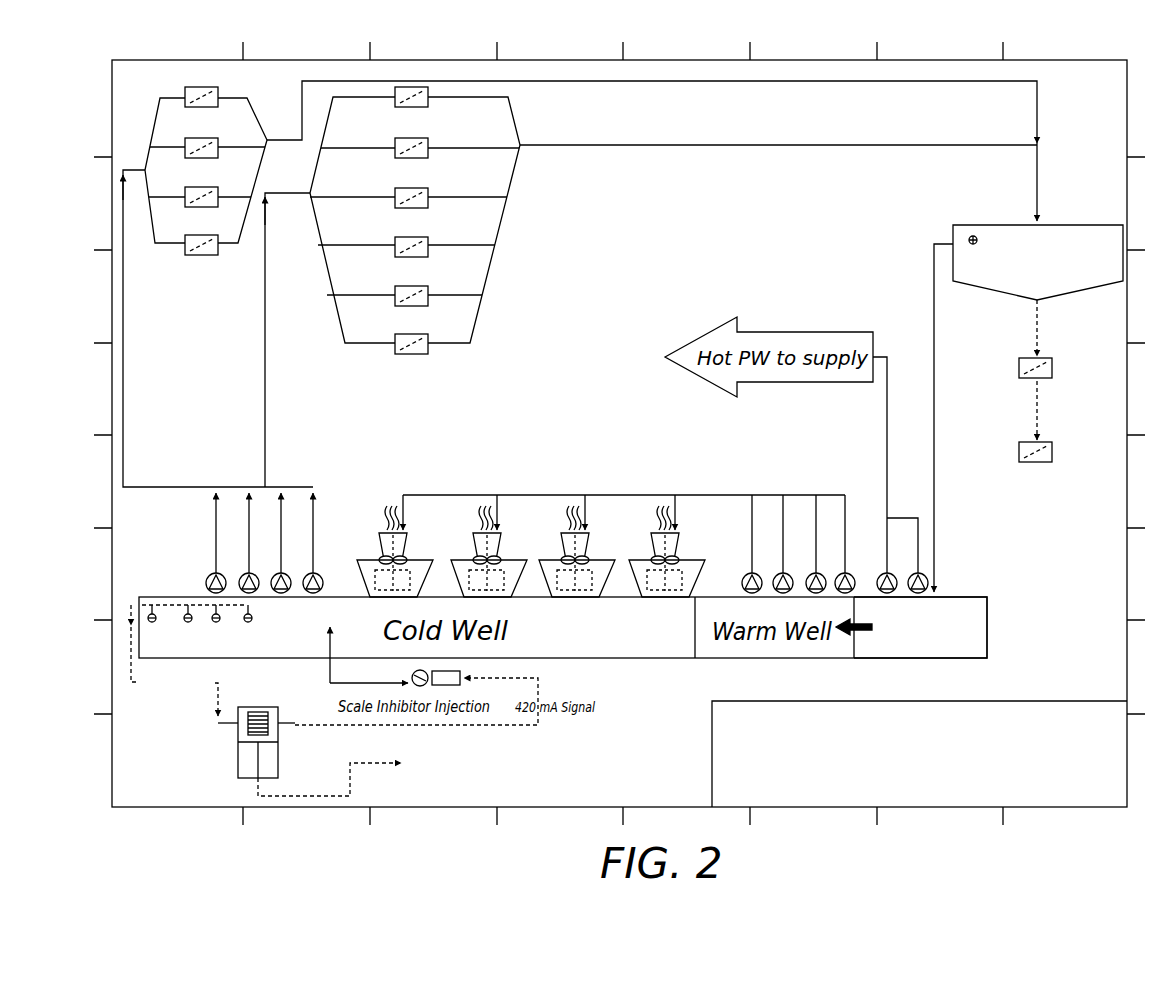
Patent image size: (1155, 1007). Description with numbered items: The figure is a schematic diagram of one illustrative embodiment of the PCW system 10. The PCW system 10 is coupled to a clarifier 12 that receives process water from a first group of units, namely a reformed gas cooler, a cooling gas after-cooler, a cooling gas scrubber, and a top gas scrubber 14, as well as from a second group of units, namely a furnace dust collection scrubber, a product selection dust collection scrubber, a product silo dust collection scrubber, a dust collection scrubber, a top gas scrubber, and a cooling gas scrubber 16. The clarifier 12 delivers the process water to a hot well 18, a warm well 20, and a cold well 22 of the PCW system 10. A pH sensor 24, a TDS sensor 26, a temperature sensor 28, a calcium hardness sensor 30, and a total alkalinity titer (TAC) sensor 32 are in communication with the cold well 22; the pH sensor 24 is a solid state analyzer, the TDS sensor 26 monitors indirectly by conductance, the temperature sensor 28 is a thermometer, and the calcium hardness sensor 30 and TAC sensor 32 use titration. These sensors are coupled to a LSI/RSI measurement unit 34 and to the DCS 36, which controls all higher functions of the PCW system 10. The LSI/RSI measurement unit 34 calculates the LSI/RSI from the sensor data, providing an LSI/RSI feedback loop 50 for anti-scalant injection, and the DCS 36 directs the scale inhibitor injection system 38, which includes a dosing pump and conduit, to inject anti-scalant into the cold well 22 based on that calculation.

The PCW system 10 is at (548, 462).
The clarifier 12 is at (1048, 258).
The reformed gas cooler, cooling gas after-cooler, cooling gas scrubber, and top gas 14 is at (272, 97).
The furnace dust collection scrubber, product selection dust collection scrubber, pr 16 is at (522, 95).
The hot well 18 is at (963, 580).
The warm well 20 is at (800, 575).
The cold well 22 is at (620, 580).
The pH sensor 24 is at (190, 582).
The TDS sensor 26 is at (187, 626).
The temperature sensor 28 is at (217, 626).
The calcium hardness sensor 30 is at (249, 626).
The total alkalinity titer (TAC) sensor 32 is at (133, 643).
The LSI/RSI measurement unit 34 is at (268, 798).
The DCS 36 is at (445, 783).
The scale inhibitor injection system 38 is at (462, 720).
The LSI/RSI feedback loop 50 is at (355, 737).